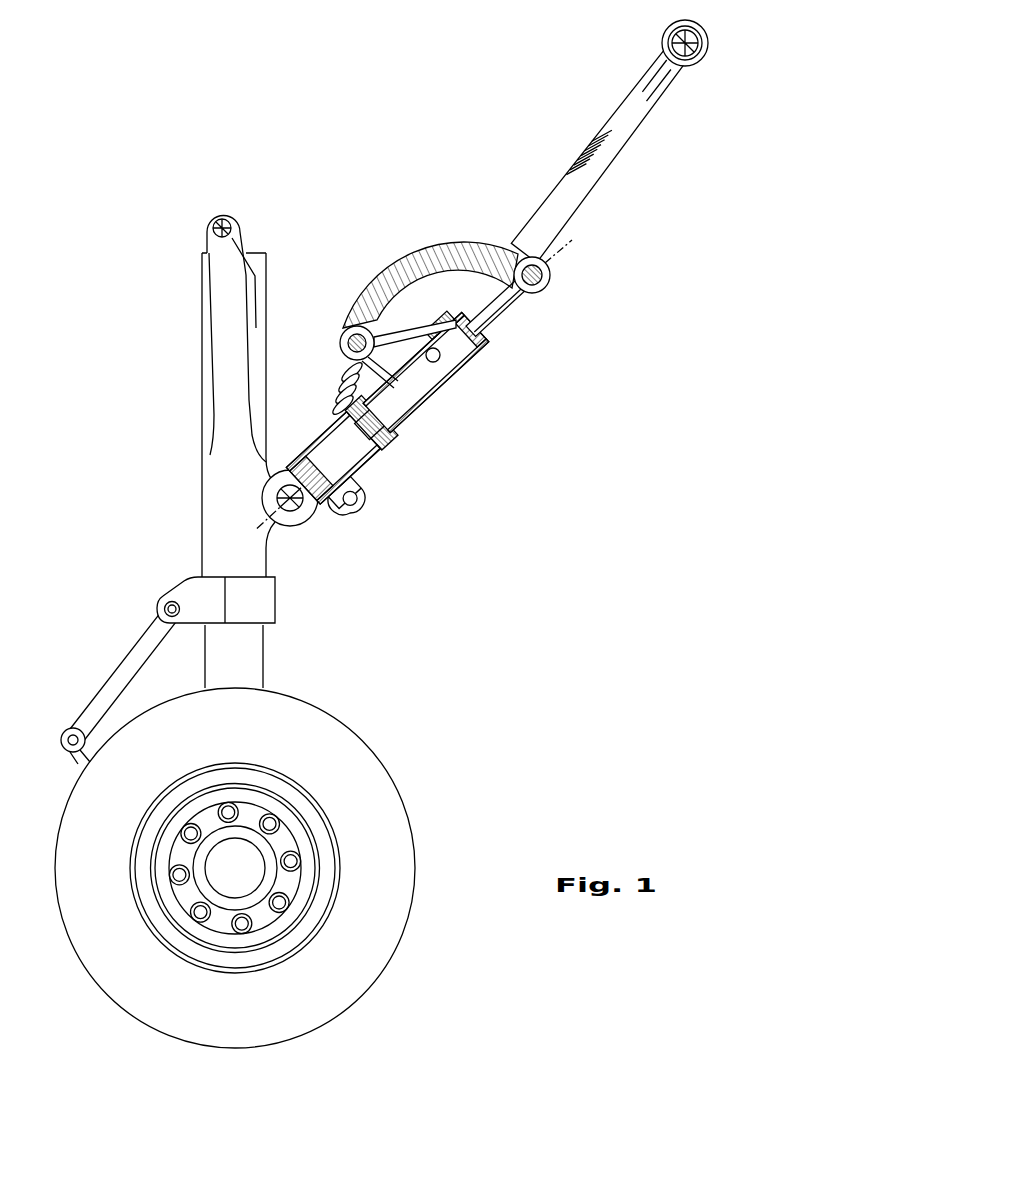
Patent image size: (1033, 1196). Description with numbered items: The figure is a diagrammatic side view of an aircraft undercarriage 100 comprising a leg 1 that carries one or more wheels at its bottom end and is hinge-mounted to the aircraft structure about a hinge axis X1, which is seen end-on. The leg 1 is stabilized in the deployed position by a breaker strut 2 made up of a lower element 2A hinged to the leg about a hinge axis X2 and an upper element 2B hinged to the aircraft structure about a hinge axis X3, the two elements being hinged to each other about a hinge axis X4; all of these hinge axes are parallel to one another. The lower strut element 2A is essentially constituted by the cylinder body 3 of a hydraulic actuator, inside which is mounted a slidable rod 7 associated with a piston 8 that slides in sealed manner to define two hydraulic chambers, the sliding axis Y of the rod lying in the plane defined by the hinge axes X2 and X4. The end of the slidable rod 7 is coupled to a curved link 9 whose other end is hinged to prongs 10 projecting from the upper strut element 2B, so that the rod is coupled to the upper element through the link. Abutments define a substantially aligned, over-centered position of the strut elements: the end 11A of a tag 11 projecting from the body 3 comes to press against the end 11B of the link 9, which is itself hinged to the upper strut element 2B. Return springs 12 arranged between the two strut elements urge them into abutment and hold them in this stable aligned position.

The aircraft undercarriage 100 is at (120, 422).
The leg 1 is at (215, 505).
The breaker strut 2 is at (622, 193).
The lower strut element 2A is at (318, 518).
The upper strut element 2B is at (607, 127).
The cylinder body 3 is at (330, 432).
The slidable rod 7 is at (495, 308).
The piston 8 is at (358, 462).
The link 9 is at (428, 248).
The prongs 10 is at (415, 352).
The tag 11 is at (412, 415).
The end of tag 11A is at (378, 440).
The end of link 11B is at (343, 333).
The return springs 12 is at (340, 398).
The hinge axis X1 is at (233, 222).
The hinge axis X2 is at (290, 512).
The hinge axis X3 is at (704, 34).
The hinge axis X4 is at (446, 370).
The sliding axis Y is at (565, 245).